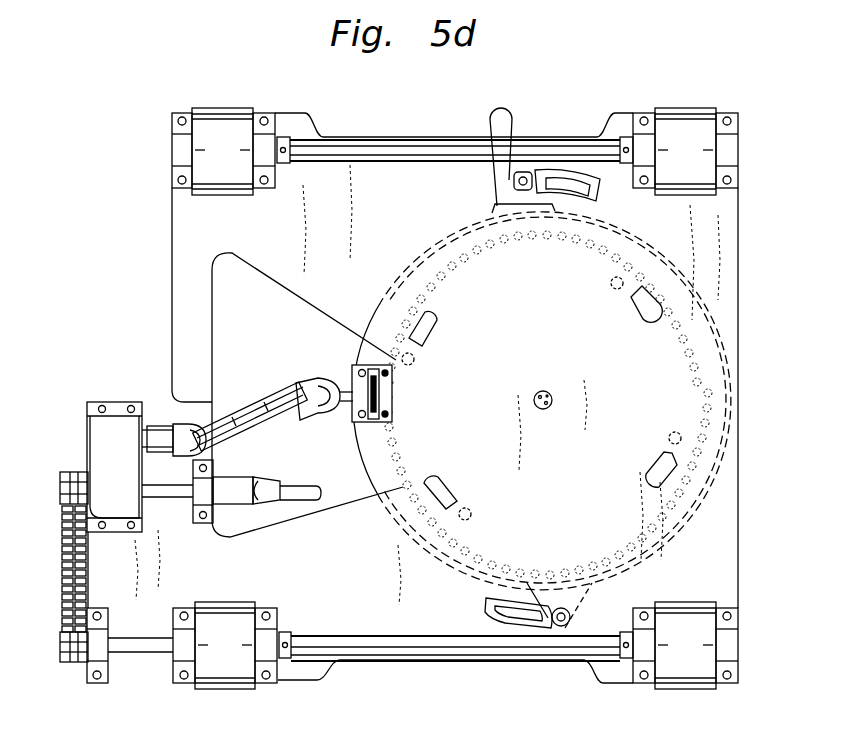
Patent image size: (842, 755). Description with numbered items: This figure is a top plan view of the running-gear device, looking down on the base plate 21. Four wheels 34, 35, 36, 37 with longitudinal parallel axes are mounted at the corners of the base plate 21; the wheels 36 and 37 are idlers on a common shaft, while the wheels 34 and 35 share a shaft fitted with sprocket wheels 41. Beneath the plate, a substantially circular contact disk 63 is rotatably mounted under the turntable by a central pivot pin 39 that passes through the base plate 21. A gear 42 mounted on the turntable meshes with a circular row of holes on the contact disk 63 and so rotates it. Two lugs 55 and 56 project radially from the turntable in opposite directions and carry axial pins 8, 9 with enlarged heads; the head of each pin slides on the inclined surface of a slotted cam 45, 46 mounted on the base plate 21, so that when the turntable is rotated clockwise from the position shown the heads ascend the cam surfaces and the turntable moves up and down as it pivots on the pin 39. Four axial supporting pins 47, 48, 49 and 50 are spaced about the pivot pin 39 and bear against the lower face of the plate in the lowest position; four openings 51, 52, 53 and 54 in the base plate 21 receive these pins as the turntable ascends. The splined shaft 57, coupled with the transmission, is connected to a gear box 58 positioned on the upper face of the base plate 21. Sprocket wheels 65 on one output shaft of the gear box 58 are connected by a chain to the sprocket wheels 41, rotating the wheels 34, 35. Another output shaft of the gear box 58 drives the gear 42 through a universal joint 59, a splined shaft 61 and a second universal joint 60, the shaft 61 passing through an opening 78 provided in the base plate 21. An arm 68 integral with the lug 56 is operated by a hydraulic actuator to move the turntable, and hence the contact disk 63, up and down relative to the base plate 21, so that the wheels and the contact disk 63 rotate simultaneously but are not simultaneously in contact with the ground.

The axial pin 8 is at (571, 617).
The axial pin 9 is at (512, 182).
The base plate 21 is at (248, 224).
The wheel 34 is at (673, 656).
The wheel 35 is at (213, 656).
The wheel 36 is at (210, 161).
The wheel 37 is at (673, 161).
The central pivot pin 39 is at (553, 400).
The sprocket wheels 41 is at (68, 662).
The gear 42 is at (393, 407).
The slotted cam 45 is at (481, 616).
The slotted cam 46 is at (592, 197).
The axial supporting pin 47 is at (472, 516).
The axial supporting pin 48 is at (413, 366).
The axial supporting pin 49 is at (610, 281).
The axial supporting pin 50 is at (670, 435).
The opening 51 is at (444, 486).
The opening 52 is at (427, 335).
The opening 53 is at (633, 309).
The opening 54 is at (652, 470).
The lug 55 is at (600, 596).
The lug 56 is at (497, 205).
The splined shaft 57 is at (297, 490).
The gear box 58 is at (102, 463).
The universal joint 59 is at (198, 424).
The universal joint 60 is at (312, 413).
The splined shaft 61 is at (257, 410).
The contact disk 63 is at (392, 288).
The sprocket wheels 65 is at (68, 472).
The arm 68 is at (512, 116).
The opening 78 is at (238, 333).